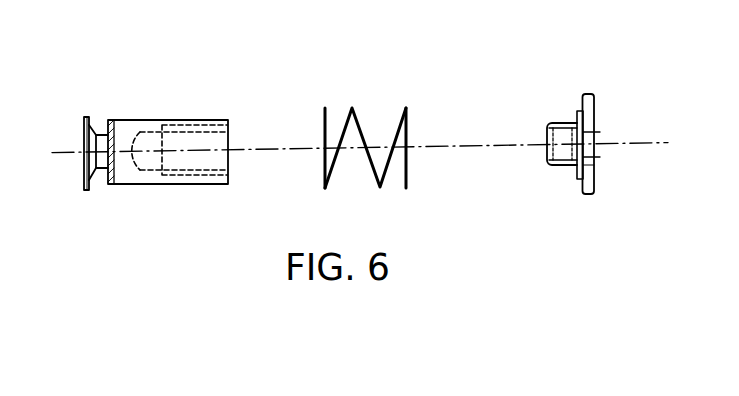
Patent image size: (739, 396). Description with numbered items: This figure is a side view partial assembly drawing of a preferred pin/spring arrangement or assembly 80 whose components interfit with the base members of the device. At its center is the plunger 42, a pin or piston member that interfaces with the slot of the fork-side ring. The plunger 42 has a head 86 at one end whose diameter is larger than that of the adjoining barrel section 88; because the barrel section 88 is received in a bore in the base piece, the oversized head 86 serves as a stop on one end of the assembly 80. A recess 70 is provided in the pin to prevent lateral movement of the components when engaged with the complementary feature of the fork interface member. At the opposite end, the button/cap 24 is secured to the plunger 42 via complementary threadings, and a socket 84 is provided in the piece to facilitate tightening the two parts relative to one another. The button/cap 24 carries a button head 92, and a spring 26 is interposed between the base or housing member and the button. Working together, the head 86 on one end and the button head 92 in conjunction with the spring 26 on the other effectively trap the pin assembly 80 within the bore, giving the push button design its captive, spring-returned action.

The button/cap 24 is at (594, 113).
The spring 26 is at (407, 123).
The plunger 42 is at (148, 214).
The recess 70 is at (92, 190).
The direction of applied force 80 is at (355, 86).
The socket 84 is at (596, 160).
The head 86 is at (85, 121).
The barrel section 88 is at (197, 184).
The button head 92 is at (588, 194).